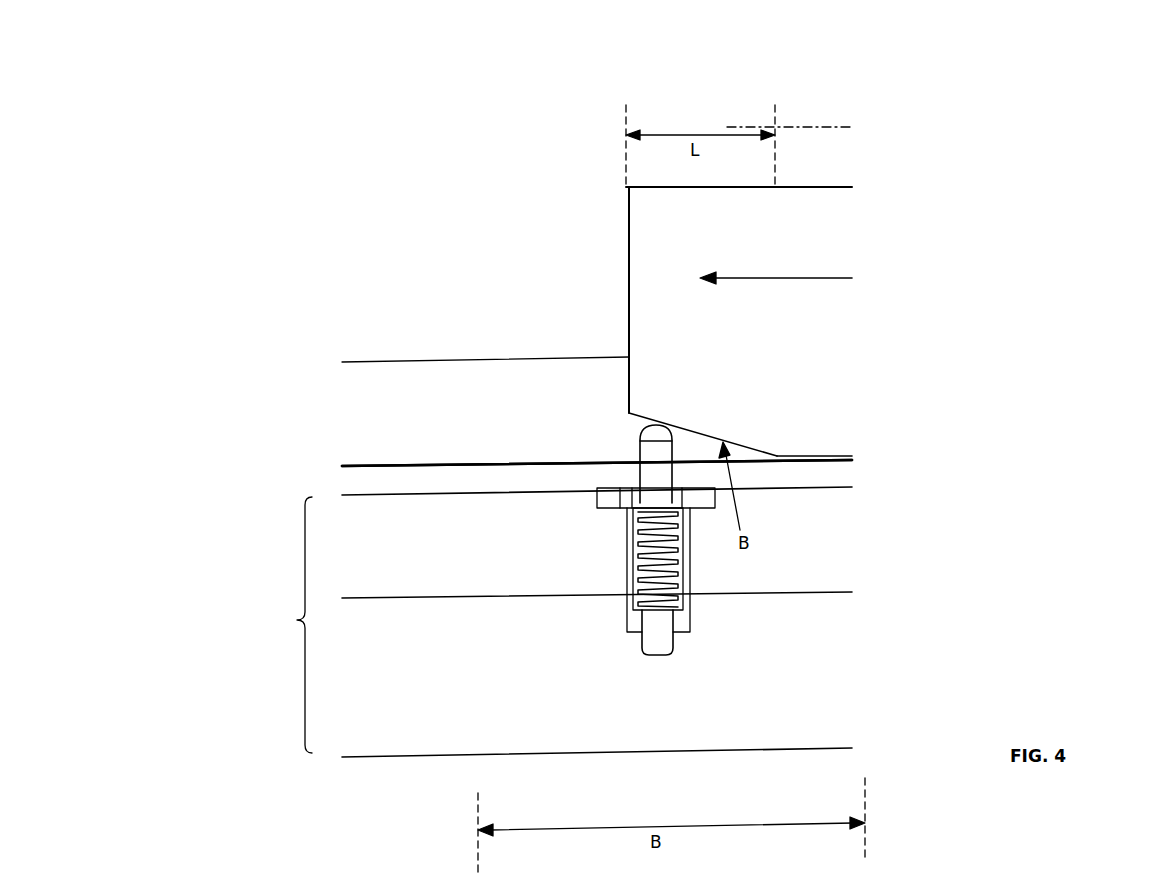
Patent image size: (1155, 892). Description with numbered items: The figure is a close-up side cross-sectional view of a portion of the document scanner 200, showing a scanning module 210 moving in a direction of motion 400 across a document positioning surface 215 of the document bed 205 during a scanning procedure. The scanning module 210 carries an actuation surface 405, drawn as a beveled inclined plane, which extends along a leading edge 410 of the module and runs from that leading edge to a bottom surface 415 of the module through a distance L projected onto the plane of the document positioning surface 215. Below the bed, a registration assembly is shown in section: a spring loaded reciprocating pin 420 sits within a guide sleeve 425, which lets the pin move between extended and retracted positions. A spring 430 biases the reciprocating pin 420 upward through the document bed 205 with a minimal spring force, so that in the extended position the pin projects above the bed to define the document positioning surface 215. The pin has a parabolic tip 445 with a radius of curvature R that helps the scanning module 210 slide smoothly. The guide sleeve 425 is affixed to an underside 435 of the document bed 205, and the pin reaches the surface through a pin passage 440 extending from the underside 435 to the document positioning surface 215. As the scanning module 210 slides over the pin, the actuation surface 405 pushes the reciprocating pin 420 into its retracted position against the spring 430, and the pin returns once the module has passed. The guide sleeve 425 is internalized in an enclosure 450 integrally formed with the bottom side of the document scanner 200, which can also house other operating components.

The document scanner 200 is at (540, 140).
The document bed 205 is at (352, 487).
The scanning module 210 is at (806, 190).
The document positioning surface 215 is at (570, 462).
The direction of motion 400 is at (776, 268).
The actuation surface 405 is at (732, 448).
The leading edge 410 is at (629, 345).
The bottom surface 415 is at (778, 458).
The reciprocating pin 420 is at (650, 452).
The guide sleeve 425 is at (683, 620).
The spring 430 is at (630, 593).
The underside 435 is at (493, 493).
The pin passage 440 is at (700, 450).
The parabolic tip 445 is at (645, 433).
The enclosure 450 is at (551, 627).